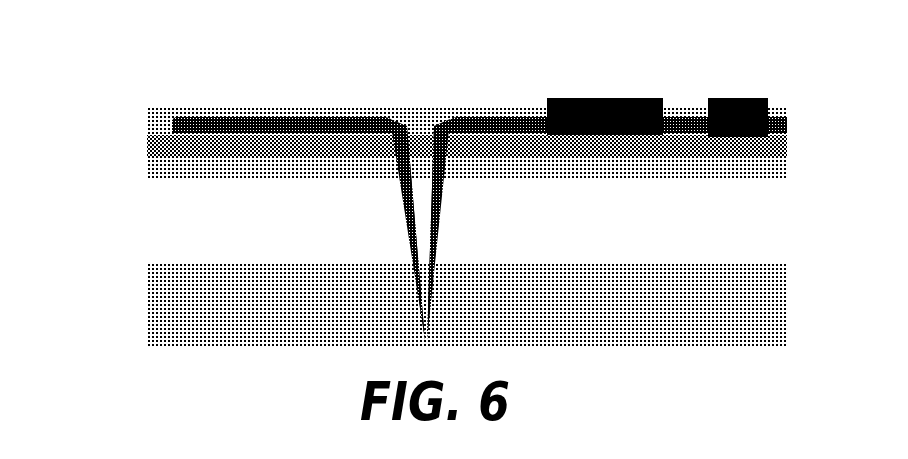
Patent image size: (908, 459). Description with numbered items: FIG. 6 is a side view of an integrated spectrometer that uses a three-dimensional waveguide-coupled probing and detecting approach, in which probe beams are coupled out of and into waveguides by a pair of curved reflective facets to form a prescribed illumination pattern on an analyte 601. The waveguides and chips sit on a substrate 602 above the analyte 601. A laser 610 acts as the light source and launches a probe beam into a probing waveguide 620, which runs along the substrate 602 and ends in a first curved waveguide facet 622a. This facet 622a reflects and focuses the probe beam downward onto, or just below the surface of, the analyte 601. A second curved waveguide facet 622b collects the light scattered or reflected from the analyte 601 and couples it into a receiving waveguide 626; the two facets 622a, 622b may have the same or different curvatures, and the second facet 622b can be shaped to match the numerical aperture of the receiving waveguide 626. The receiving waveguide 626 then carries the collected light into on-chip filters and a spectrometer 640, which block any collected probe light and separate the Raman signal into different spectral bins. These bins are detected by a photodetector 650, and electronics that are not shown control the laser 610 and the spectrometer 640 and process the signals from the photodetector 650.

The analyte 601 is at (467, 305).
The substrate 602 is at (442, 143).
The laser 610 is at (178, 148).
The probing waveguide 620 is at (202, 108).
The first curved waveguide facet 622a is at (407, 110).
The second curved waveguide facet 622b is at (440, 110).
The receiving waveguide 626 is at (513, 112).
The spectrometer 640 is at (601, 144).
The photodetector 650 is at (742, 146).